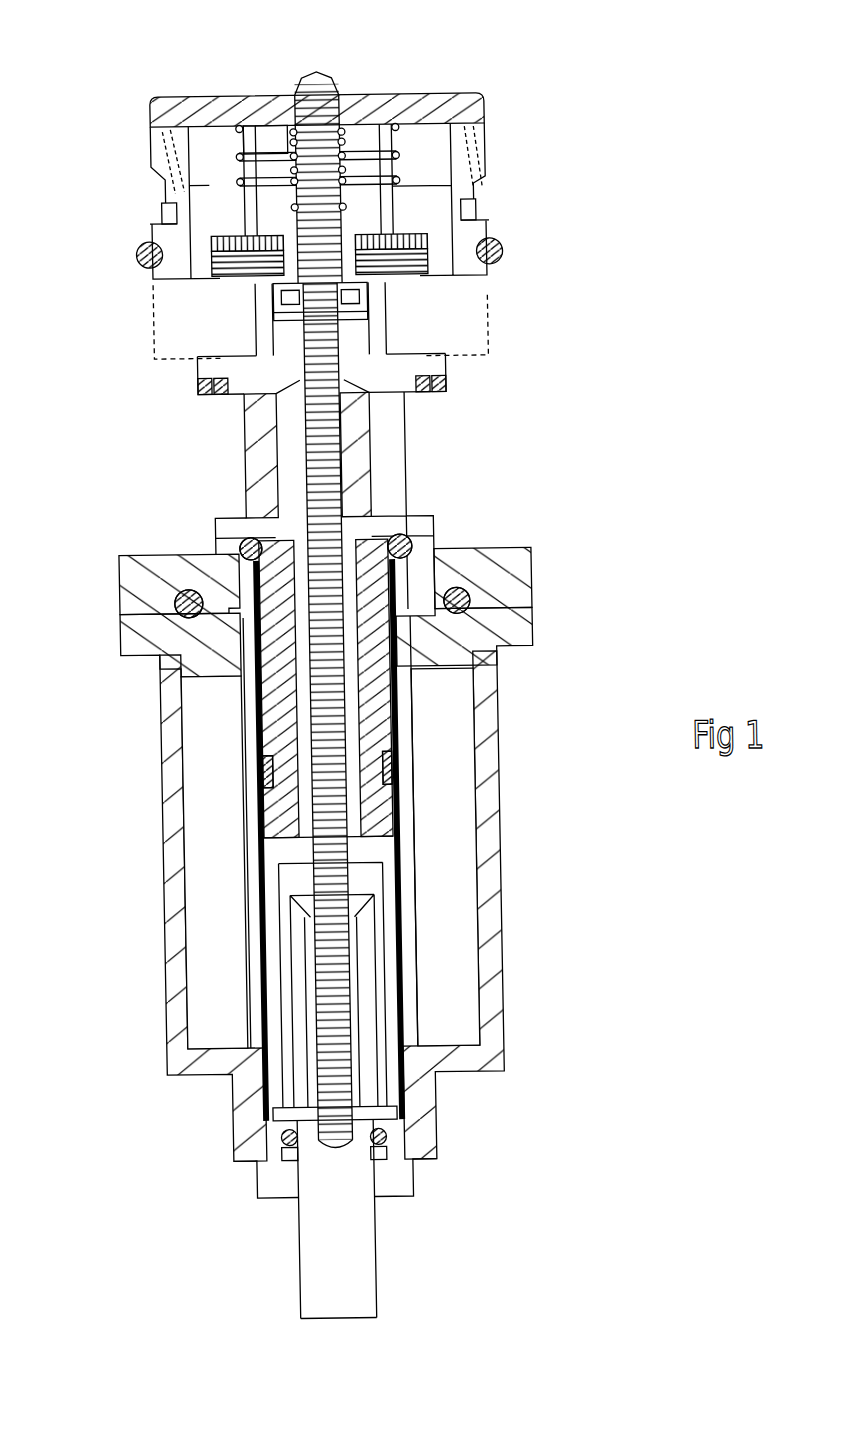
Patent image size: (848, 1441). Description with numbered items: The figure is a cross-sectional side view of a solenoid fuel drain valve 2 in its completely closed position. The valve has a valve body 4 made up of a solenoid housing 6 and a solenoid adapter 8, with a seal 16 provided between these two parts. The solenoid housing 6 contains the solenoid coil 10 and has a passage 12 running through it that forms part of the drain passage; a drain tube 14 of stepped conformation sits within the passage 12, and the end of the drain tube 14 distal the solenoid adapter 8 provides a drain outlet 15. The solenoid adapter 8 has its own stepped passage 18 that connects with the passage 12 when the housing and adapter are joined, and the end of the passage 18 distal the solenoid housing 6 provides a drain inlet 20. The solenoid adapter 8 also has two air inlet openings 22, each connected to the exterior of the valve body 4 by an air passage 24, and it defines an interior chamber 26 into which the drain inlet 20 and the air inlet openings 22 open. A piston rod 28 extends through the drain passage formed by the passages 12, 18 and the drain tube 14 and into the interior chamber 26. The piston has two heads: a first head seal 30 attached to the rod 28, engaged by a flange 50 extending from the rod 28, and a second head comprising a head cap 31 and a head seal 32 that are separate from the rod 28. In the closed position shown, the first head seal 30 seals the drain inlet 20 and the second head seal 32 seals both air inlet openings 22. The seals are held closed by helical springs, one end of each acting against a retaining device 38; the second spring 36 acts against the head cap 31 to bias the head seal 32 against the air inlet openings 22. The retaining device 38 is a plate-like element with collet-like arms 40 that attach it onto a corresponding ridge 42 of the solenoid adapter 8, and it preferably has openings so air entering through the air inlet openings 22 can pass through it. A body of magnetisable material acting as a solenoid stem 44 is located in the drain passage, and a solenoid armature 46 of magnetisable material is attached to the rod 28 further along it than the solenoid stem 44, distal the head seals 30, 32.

The solenoid fuel drain valve 2 is at (582, 495).
The valve body 4 is at (585, 613).
The solenoid housing 6 is at (483, 790).
The solenoid adapter 8 is at (381, 425).
The solenoid coil 10 is at (189, 767).
The passage 12 is at (242, 823).
The drain tube 14 is at (214, 1077).
The drain outlet 15 is at (314, 1318).
The seal 16 is at (440, 605).
The passage 18 is at (362, 473).
The drain inlet 20 is at (193, 393).
The air inlet openings 22 is at (147, 310).
The air passage 24 is at (287, 127).
The interior chamber 26 is at (418, 207).
The rod 28 is at (363, 447).
The head seal 30 is at (373, 313).
The head cap 31 is at (206, 245).
The head seal 32 is at (420, 253).
The helical spring 36 is at (237, 137).
The retaining device 38 is at (378, 125).
The collet-like arms 40 is at (160, 207).
The ridge 42 is at (162, 172).
The solenoid stem 44 is at (394, 693).
The solenoid armature 46 is at (380, 953).
The flange 50 is at (385, 290).